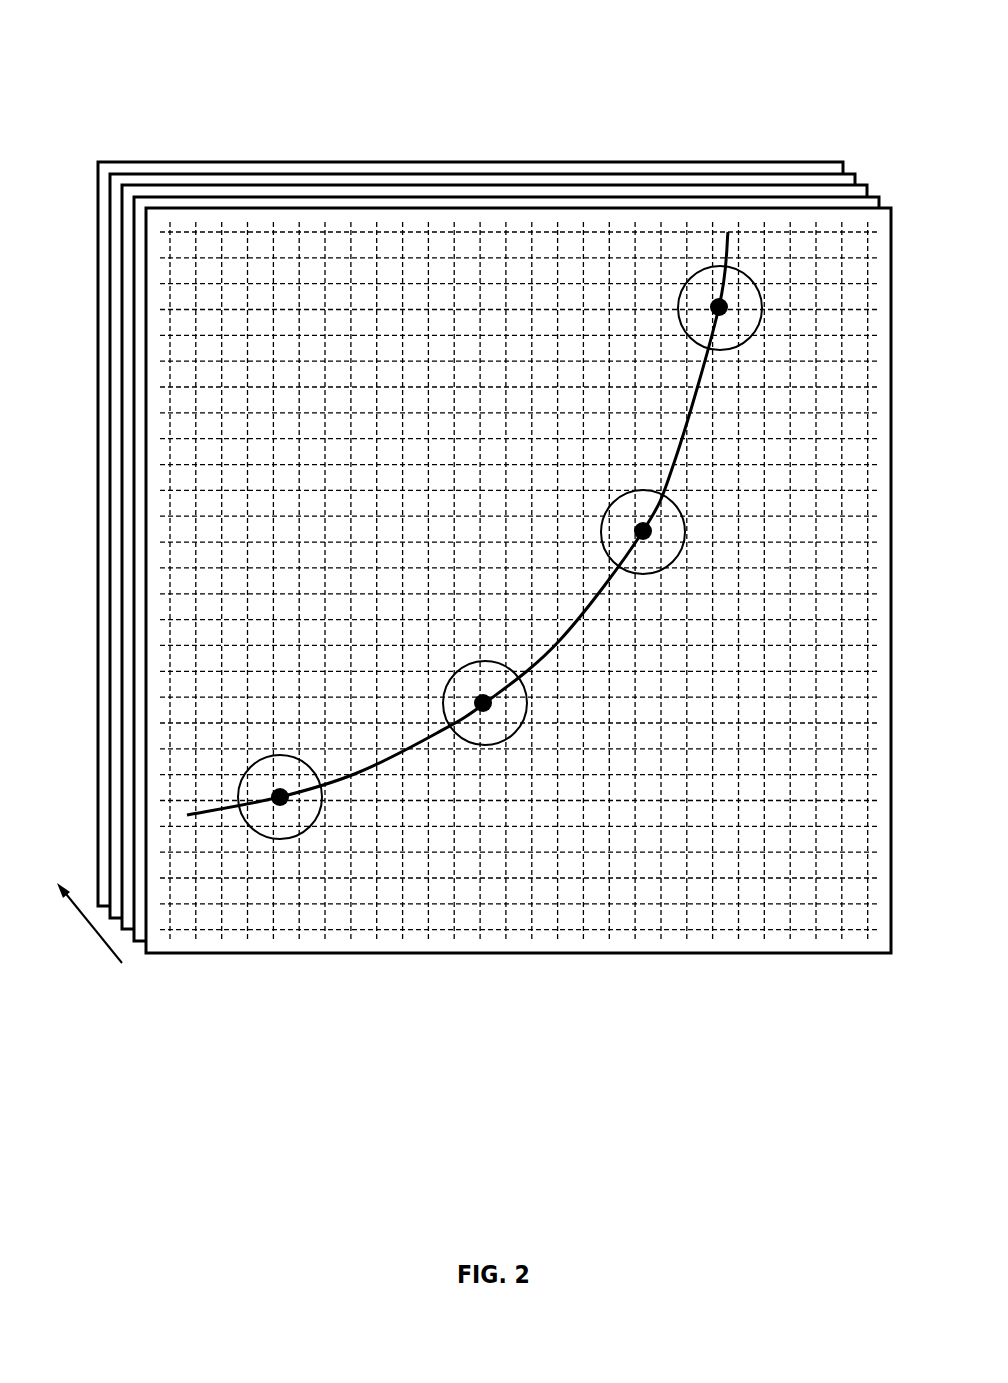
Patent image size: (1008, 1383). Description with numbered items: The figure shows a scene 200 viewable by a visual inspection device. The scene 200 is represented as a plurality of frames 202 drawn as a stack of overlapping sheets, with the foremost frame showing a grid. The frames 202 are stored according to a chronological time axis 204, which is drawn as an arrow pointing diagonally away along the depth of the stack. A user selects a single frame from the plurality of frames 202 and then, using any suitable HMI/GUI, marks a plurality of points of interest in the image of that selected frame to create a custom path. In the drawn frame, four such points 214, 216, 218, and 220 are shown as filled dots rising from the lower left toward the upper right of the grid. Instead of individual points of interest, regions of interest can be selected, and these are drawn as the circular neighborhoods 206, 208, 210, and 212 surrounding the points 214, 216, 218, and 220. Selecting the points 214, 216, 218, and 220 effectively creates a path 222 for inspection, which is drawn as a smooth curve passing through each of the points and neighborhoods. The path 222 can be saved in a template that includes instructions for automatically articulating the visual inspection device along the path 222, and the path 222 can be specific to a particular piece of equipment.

The scene 200 is at (452, 70).
The plurality of frames 202 is at (150, 220).
The chronological time axis 204 is at (103, 951).
The neighborhood 206 is at (677, 313).
The neighborhood 208 is at (617, 495).
The neighborhood 210 is at (460, 677).
The neighborhood 212 is at (283, 753).
The point 214 is at (285, 800).
The point 216 is at (490, 710).
The point 218 is at (647, 538).
The point 220 is at (722, 312).
The path 222 is at (575, 627).